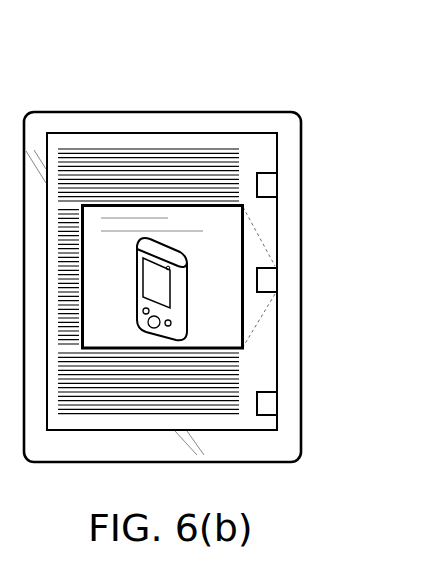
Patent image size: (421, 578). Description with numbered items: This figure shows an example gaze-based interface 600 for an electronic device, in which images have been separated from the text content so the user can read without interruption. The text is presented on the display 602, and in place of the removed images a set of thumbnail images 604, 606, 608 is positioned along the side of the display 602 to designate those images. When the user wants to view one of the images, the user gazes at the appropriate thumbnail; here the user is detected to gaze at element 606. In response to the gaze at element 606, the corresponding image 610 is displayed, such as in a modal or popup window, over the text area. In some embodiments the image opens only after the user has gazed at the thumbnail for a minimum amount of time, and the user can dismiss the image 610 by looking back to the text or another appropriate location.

The handheld device / electronic device 600 is at (332, 89).
The display 602 is at (121, 132).
The thumbnail image 604 is at (277, 187).
The thumbnail image 606 is at (277, 283).
The thumbnail image 608 is at (277, 405).
The corresponding image 610 is at (220, 349).